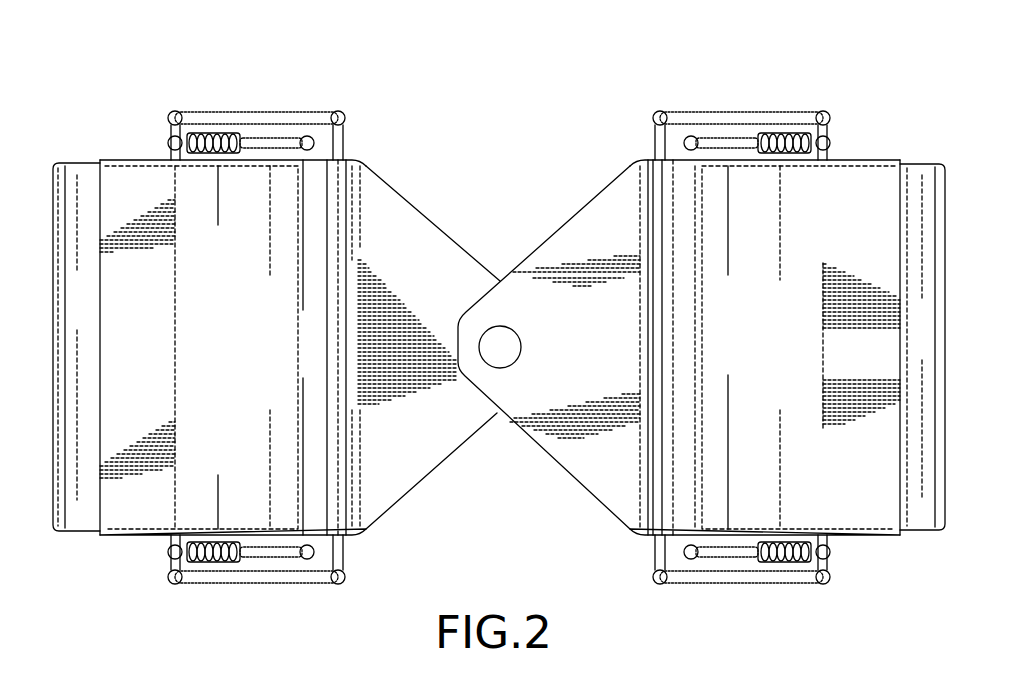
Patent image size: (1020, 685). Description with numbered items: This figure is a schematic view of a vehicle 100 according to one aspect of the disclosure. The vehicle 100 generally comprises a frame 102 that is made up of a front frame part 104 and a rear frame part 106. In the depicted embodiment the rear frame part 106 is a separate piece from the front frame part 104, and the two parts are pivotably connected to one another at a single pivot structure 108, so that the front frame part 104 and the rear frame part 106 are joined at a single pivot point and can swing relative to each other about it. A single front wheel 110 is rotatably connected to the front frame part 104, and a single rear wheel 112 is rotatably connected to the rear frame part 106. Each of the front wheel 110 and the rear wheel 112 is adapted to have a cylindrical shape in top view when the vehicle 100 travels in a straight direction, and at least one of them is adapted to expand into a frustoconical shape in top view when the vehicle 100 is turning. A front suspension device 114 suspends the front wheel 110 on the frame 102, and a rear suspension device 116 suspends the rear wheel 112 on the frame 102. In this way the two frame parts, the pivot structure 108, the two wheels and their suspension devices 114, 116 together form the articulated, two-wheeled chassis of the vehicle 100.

The vehicle 100 is at (863, 112).
The frame 102 is at (499, 322).
The front frame part 104 is at (419, 488).
The rear frame part 106 is at (592, 495).
The pivot structure 108 is at (500, 342).
The front wheel 110 is at (73, 163).
The rear wheel 112 is at (923, 530).
The front suspension device 114 is at (258, 582).
The rear suspension device 116 is at (763, 582).